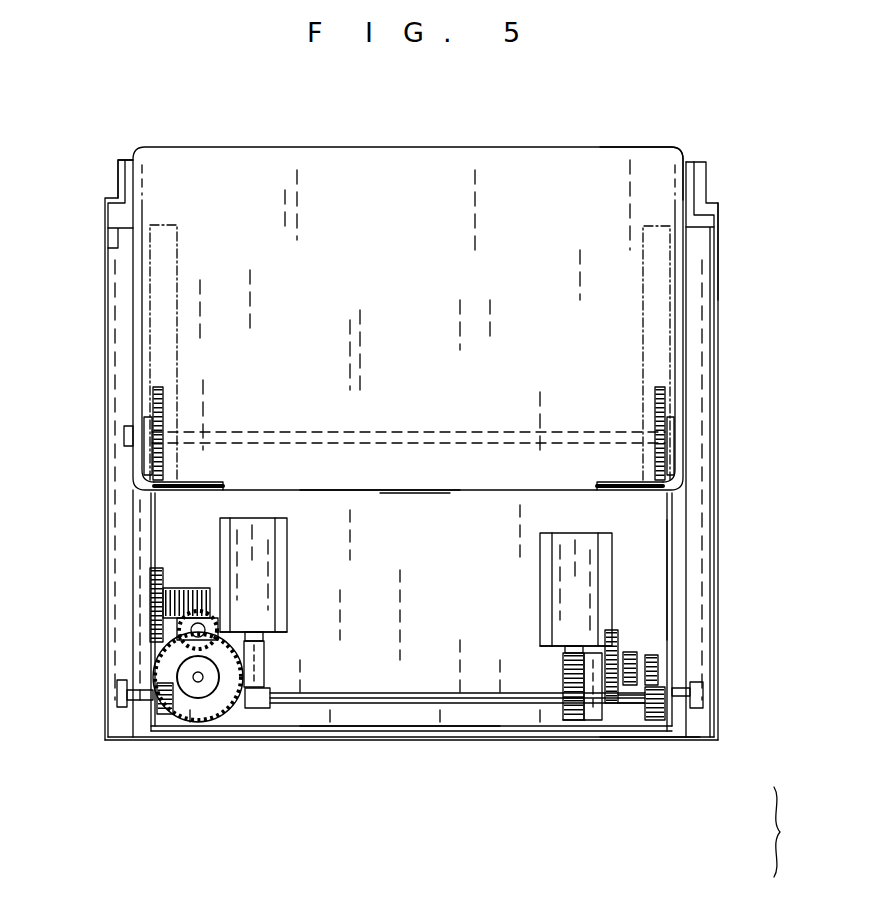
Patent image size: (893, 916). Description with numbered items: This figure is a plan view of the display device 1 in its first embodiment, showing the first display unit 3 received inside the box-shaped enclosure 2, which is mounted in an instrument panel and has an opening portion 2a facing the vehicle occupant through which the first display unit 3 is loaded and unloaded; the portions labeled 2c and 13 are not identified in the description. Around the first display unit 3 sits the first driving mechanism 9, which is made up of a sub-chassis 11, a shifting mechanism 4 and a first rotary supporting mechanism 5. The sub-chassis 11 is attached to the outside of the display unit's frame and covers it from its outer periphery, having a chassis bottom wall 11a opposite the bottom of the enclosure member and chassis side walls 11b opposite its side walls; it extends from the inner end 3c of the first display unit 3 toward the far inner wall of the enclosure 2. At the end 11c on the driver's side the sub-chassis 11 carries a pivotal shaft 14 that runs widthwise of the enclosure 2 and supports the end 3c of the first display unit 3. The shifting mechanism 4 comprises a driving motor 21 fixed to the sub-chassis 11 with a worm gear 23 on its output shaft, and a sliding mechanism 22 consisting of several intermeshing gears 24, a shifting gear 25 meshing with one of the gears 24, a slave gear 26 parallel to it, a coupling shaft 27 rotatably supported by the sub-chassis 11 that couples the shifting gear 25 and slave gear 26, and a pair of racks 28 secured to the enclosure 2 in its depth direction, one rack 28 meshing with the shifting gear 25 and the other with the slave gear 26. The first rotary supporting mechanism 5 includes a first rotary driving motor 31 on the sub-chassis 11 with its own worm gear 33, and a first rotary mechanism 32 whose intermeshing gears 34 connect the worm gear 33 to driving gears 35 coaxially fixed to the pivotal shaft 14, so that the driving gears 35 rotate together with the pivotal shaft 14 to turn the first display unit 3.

The display device 1 is at (744, 165).
The enclosure 2 is at (718, 256).
The opening portion 2a is at (132, 160).
The casing bottom wall 2c is at (632, 738).
The first display unit 3 is at (618, 141).
The end 3c is at (378, 468).
The shifting mechanism 4 is at (483, 612).
The first rotary supporting mechanism 5 is at (376, 594).
The first driving mechanism 9 is at (769, 834).
The sub-chassis 11 is at (684, 494).
The chassis bottom wall 11a is at (430, 736).
The chassis side walls 11b is at (672, 563).
The end 11c is at (413, 516).
The lid top 13 is at (676, 127).
The pivotal shaft 14 is at (458, 432).
The driving motor 21 is at (540, 588).
The sliding mechanism 22 is at (541, 721).
The worm gear 23 is at (566, 664).
The gears 24 is at (637, 652).
The shifting gear 25 is at (672, 702).
The slave gear 26 is at (170, 722).
The coupling shaft 27 is at (435, 690).
The racks 28 is at (178, 324).
The first rotary driving motor 31 is at (284, 550).
The first rotary mechanism 32 is at (272, 708).
The worm gear 33 is at (268, 652).
The gears 34 is at (190, 587).
The driving gears 35 is at (158, 386).